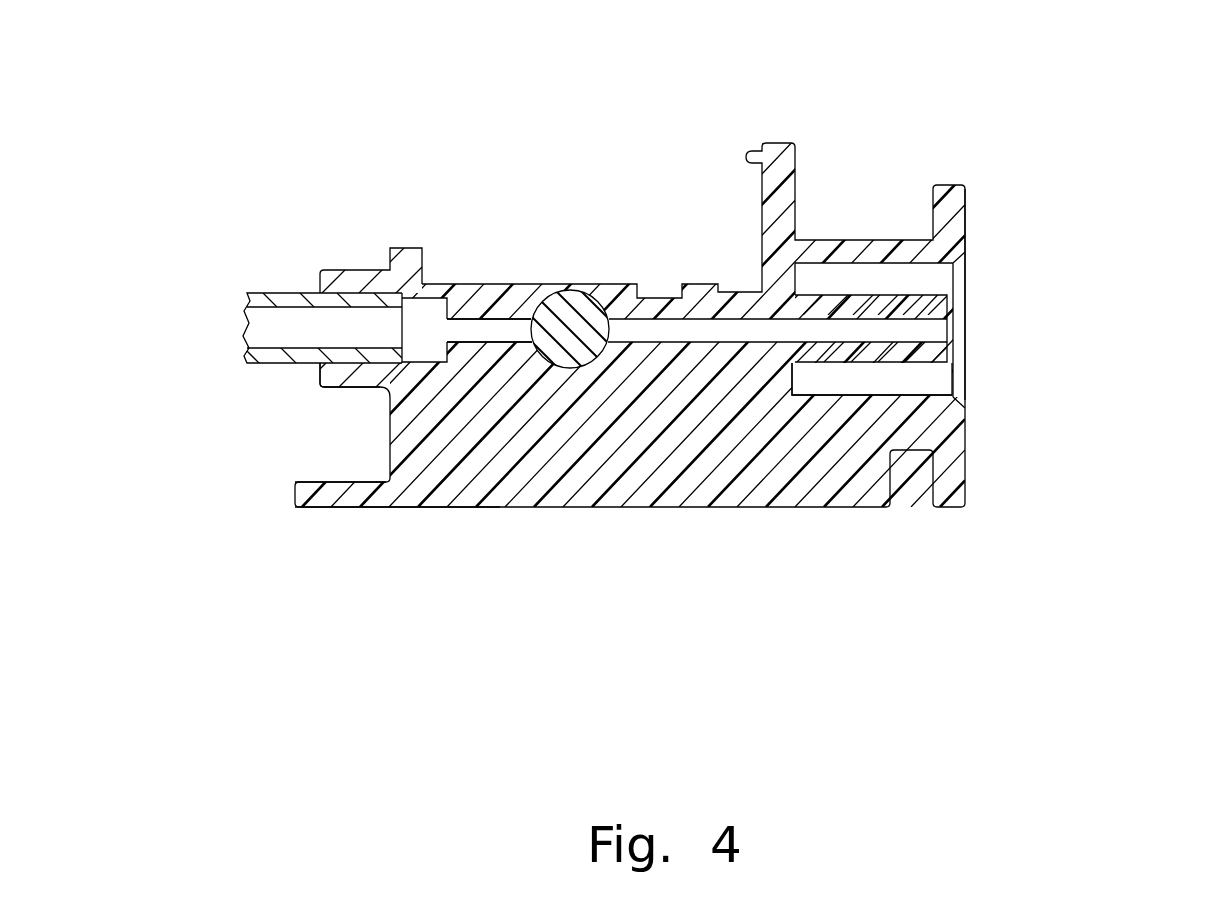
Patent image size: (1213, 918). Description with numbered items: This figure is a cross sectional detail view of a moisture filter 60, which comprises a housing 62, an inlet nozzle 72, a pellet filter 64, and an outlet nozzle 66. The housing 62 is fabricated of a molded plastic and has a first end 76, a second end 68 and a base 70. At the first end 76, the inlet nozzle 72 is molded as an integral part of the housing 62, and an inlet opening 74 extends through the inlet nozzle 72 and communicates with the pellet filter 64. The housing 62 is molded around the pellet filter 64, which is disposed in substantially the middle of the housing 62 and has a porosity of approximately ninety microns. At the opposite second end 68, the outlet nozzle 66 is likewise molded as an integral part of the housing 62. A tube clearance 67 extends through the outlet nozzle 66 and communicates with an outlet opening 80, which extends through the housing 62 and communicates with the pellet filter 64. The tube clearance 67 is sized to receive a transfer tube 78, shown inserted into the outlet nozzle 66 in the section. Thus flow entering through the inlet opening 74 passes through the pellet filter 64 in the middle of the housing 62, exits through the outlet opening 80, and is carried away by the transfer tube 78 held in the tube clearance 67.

The moisture filter 60 is at (840, 172).
The housing 62 is at (663, 298).
The pellet filter 64 is at (570, 297).
The outlet nozzle 66 is at (347, 270).
The tube clearance 67 is at (340, 390).
The second end 68 is at (320, 376).
The base 70 is at (355, 497).
The inlet nozzle 72 is at (927, 363).
The inlet opening 74 is at (877, 325).
The first end 76 is at (967, 278).
The transfer tube 78 is at (263, 293).
The outlet opening 80 is at (502, 332).